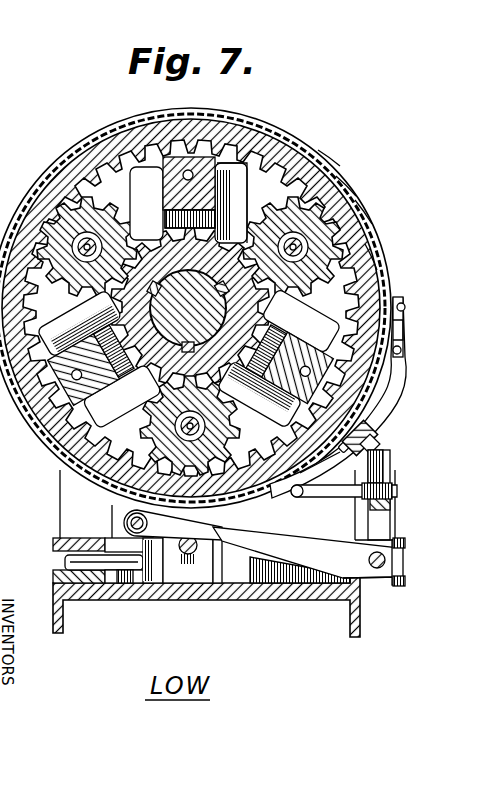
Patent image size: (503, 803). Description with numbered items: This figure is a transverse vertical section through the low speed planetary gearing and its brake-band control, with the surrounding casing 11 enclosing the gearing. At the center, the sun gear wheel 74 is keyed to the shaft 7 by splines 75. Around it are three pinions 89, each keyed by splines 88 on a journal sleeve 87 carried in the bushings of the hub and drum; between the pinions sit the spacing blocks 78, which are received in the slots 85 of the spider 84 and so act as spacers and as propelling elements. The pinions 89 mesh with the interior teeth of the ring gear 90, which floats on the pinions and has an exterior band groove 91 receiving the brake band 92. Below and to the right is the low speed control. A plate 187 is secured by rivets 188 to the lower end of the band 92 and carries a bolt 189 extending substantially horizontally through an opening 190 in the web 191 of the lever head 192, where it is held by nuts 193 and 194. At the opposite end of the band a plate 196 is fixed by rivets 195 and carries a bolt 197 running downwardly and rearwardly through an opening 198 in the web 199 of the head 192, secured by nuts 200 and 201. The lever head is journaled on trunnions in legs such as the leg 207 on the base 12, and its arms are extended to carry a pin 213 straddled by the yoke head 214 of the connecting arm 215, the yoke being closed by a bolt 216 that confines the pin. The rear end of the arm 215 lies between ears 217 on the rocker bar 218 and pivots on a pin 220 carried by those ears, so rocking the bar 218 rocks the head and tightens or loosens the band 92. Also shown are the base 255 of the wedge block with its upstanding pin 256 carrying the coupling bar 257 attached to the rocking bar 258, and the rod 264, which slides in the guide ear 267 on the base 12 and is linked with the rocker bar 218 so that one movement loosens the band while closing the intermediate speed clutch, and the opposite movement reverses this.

The shaft 7 is at (133, 312).
The housing 11 is at (62, 487).
The base 12 is at (56, 597).
The sun gear wheel 74 is at (105, 316).
The splines 75 is at (152, 283).
The spacing blocks 78 is at (236, 177).
The spider 84 is at (275, 140).
The slots 85 is at (212, 220).
The journal sleeves 87 is at (368, 243).
The splines 88 is at (350, 222).
The pinions 89 is at (338, 193).
The ring gear 90 is at (377, 268).
The band groove 91 is at (122, 122).
The brake band 92 is at (75, 137).
The plate 187 is at (297, 494).
The rivets 188 is at (270, 527).
The bolt 189 is at (333, 492).
The opening 190 is at (397, 517).
The web 191 is at (392, 480).
The lever head 192 is at (356, 470).
The nut 193 is at (368, 512).
The nut 194 is at (397, 493).
The rivets 195 is at (400, 303).
The plate 196 is at (403, 328).
The bolt 197 is at (405, 370).
The opening 198 is at (380, 438).
The web 199 is at (383, 450).
The nut 200 is at (380, 425).
The nut 201 is at (383, 462).
The leg 207 is at (300, 578).
The pin 213 is at (400, 580).
The yoke head 214 is at (402, 545).
The connecting arm 215 is at (343, 562).
The bolt 216 is at (400, 560).
The ears 217 is at (120, 508).
The rocker bar 218 is at (58, 544).
The pin 220 is at (125, 522).
The base 255 is at (140, 578).
The upstanding pin 256 is at (110, 585).
The coupling bar 257 is at (64, 562).
The rocking bar 258 is at (58, 579).
The rod 264 is at (198, 537).
The guide ear 267 is at (205, 575).